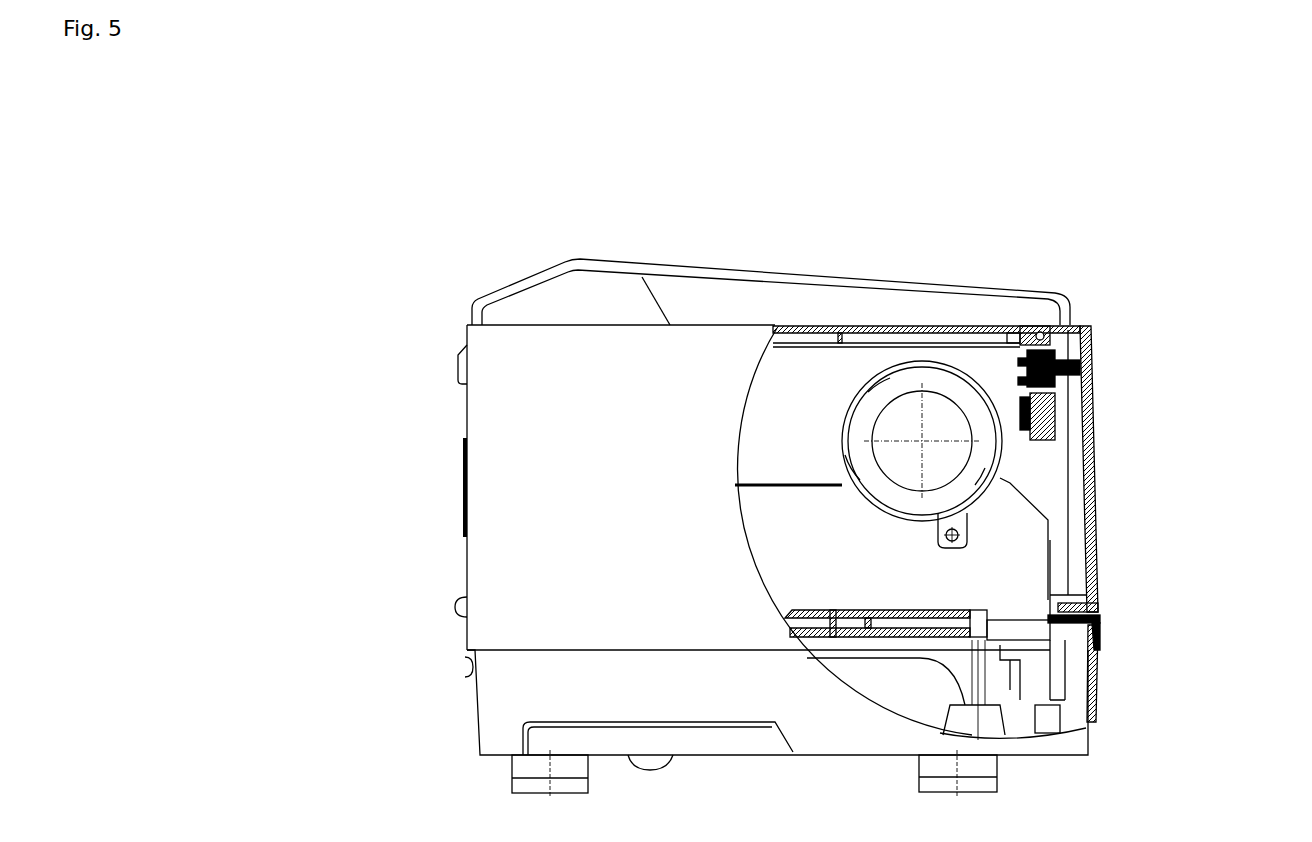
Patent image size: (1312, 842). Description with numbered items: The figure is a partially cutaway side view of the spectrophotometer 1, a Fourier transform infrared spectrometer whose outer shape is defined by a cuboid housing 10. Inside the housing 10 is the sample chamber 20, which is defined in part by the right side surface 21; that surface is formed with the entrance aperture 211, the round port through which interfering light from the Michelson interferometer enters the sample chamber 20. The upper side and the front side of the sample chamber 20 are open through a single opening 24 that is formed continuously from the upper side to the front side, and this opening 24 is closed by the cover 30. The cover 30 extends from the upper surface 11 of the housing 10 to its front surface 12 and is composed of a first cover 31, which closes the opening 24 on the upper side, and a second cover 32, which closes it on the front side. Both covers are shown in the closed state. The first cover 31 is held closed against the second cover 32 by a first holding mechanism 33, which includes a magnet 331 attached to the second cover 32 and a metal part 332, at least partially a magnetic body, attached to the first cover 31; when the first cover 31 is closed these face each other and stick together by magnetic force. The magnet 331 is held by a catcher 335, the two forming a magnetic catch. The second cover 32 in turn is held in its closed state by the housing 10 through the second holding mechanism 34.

The spectrophotometer 1 is at (826, 461).
The housing 10 is at (727, 271).
The upper surface 11 is at (518, 325).
The front surface 12 is at (1095, 688).
The sample chamber 20 is at (818, 583).
The right side surface 21 is at (827, 385).
The entrance aperture 211 is at (943, 420).
The opening 24 is at (780, 371).
The cover 30 is at (1033, 389).
The first cover 31 is at (938, 327).
The second cover 32 is at (1093, 488).
The first holding mechanism 33 is at (1161, 387).
The magnet 331 is at (1057, 368).
The metal part 332 is at (1082, 330).
The catcher 335 is at (1055, 418).
The second holding mechanism 34 is at (1080, 598).